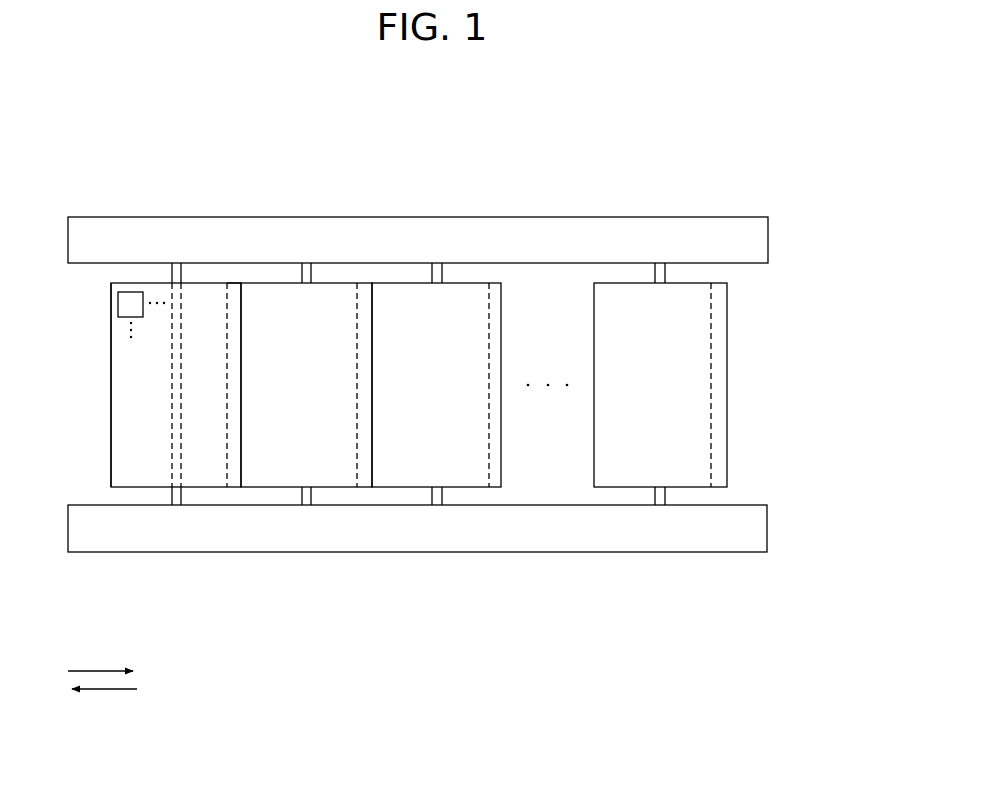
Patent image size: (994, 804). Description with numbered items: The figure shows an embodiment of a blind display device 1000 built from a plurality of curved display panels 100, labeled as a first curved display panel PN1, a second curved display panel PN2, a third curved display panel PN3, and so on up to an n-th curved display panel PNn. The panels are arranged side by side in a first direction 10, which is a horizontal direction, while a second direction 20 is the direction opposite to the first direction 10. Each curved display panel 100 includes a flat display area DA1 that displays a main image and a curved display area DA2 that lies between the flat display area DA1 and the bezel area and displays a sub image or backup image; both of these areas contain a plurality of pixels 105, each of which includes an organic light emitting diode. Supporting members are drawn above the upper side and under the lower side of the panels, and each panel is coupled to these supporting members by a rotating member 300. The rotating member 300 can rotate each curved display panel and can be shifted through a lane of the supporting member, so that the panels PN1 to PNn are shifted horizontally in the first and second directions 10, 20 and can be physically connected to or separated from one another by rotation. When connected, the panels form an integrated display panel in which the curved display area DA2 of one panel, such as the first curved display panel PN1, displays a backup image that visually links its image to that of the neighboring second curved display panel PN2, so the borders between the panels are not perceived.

The blind display device 1000 is at (395, 110).
The curved display panel 100 is at (372, 442).
The pixel 105 is at (118, 303).
The rotating member 300 is at (171, 263).
The flat display area DA1 is at (127, 370).
The curved display area DA2 is at (234, 278).
The first curved display panel PN1 is at (203, 477).
The second curved display panel PN2 is at (332, 477).
The third curved display panel PN3 is at (465, 477).
The n-th curved display panel PNn is at (688, 477).
The first direction 10 is at (103, 671).
The second direction 20 is at (103, 689).